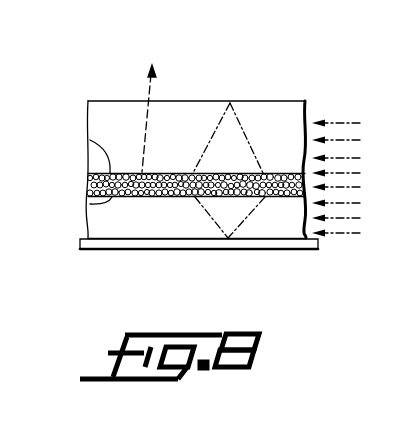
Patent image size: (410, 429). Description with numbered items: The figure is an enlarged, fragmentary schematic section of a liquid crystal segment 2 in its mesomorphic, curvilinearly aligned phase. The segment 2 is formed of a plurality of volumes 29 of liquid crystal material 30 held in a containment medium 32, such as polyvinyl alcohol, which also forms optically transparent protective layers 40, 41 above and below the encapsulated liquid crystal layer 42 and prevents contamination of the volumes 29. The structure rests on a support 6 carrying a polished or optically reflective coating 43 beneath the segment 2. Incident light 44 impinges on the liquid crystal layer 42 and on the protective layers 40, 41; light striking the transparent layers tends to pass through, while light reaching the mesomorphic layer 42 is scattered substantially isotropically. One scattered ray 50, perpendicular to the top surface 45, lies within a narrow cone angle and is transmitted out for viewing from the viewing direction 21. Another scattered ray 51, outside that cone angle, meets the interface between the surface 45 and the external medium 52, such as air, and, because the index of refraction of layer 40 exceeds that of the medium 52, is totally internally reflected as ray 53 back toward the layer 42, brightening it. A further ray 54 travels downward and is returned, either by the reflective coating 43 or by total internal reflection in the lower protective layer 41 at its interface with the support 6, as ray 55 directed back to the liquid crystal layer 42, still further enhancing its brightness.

The liquid crystal segment 2 is at (242, 110).
The support 6 is at (181, 243).
The viewing direction 21 is at (199, 88).
The volumes 29 is at (90, 204).
The liquid crystal material 30 is at (88, 175).
The containment medium 32 is at (90, 140).
The protective layer 40 is at (298, 108).
The protective layer 41 is at (98, 222).
The encapsulated liquid crystal layer 42 is at (76, 184).
The optically reflective coating 43 is at (130, 236).
The incident light 44 is at (360, 116).
The top surface 45 is at (107, 100).
The light ray 50 is at (145, 116).
The scattered light ray 51 is at (252, 146).
The external medium 52 is at (124, 102).
The ray 53 is at (198, 152).
The light ray 54 is at (246, 222).
The light ray 55 is at (215, 226).